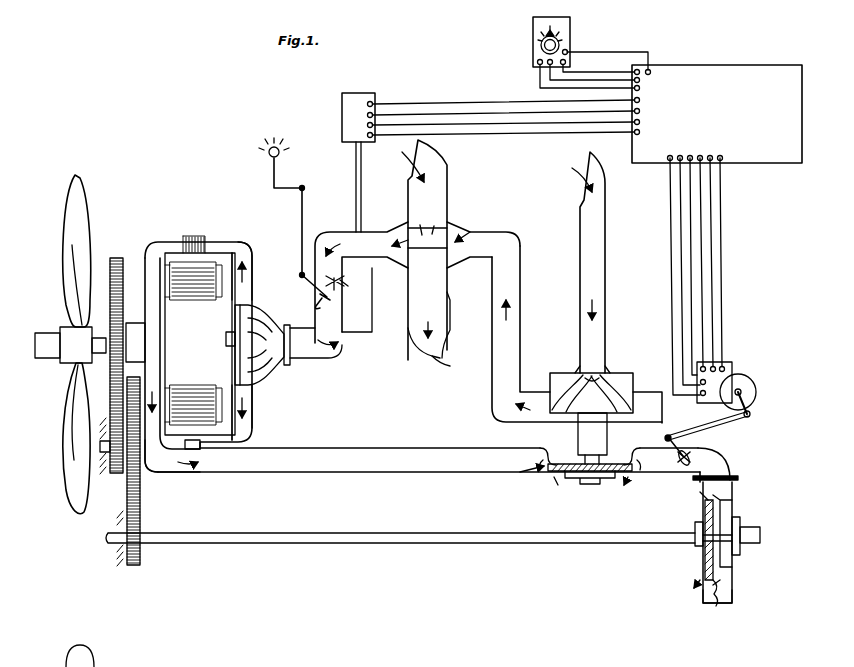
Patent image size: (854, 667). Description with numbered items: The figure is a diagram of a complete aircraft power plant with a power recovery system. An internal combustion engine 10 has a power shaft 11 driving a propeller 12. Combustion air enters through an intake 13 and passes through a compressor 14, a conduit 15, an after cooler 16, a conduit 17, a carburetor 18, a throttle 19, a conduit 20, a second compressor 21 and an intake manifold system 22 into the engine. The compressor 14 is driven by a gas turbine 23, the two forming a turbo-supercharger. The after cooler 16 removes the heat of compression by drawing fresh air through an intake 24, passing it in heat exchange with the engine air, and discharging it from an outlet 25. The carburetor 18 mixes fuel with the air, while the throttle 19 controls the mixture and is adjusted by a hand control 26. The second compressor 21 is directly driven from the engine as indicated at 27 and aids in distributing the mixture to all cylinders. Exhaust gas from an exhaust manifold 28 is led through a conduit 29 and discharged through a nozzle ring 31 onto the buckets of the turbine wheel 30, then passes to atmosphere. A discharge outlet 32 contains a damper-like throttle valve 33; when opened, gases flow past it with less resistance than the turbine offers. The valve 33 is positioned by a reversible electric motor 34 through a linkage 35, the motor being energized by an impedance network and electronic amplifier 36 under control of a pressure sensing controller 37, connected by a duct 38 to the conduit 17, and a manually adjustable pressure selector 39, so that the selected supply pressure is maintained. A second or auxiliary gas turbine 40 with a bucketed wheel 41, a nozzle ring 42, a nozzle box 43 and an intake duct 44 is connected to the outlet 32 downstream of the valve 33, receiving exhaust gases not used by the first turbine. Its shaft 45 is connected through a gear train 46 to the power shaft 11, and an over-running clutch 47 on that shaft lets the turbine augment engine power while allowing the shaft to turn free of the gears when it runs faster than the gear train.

The internal combustion engine 10 is at (198, 335).
The power shaft 11 is at (100, 332).
The propeller 12 is at (78, 216).
The intake 13 is at (582, 170).
The compressor 14 is at (578, 384).
The conduit 15 is at (518, 342).
The after cooler 16 is at (456, 228).
The conduit 17 is at (338, 234).
The carburetor 18 is at (352, 282).
The throttle 19 is at (318, 294).
The conduit 20 is at (328, 350).
The second compressor 21 is at (258, 334).
The intake manifold system 22 is at (246, 252).
The gas turbine 23 is at (524, 480).
The intake 24 is at (406, 170).
The outlet 25 is at (446, 360).
The hand control 26 is at (280, 166).
The direct drive 27 is at (228, 340).
The exhaust manifold 28 is at (148, 462).
The conduit or duct 29 is at (378, 462).
The turbine wheel 30 is at (580, 485).
The nozzle ring 31 is at (546, 452).
The discharge duct or outlet 32 is at (666, 464).
The throttle valve 33 is at (712, 438).
The reversible electric motor 34 is at (745, 382).
The linkage 35 is at (749, 418).
The impedance network and electronic amplifier 36 is at (759, 74).
The pressure sensing controller 37 is at (346, 106).
The duct 38 is at (356, 150).
The manually adjustable pressure selector 39 is at (533, 23).
The second or auxiliary gas turbine 40 is at (744, 500).
The bucketed wheel 41 is at (704, 556).
The nozzle ring 42 is at (722, 592).
The nozzle box 43 is at (735, 590).
The intake duct 44 is at (722, 488).
The shaft 45 is at (465, 540).
The gear train 46 is at (117, 490).
The over-running clutch 47 is at (107, 358).